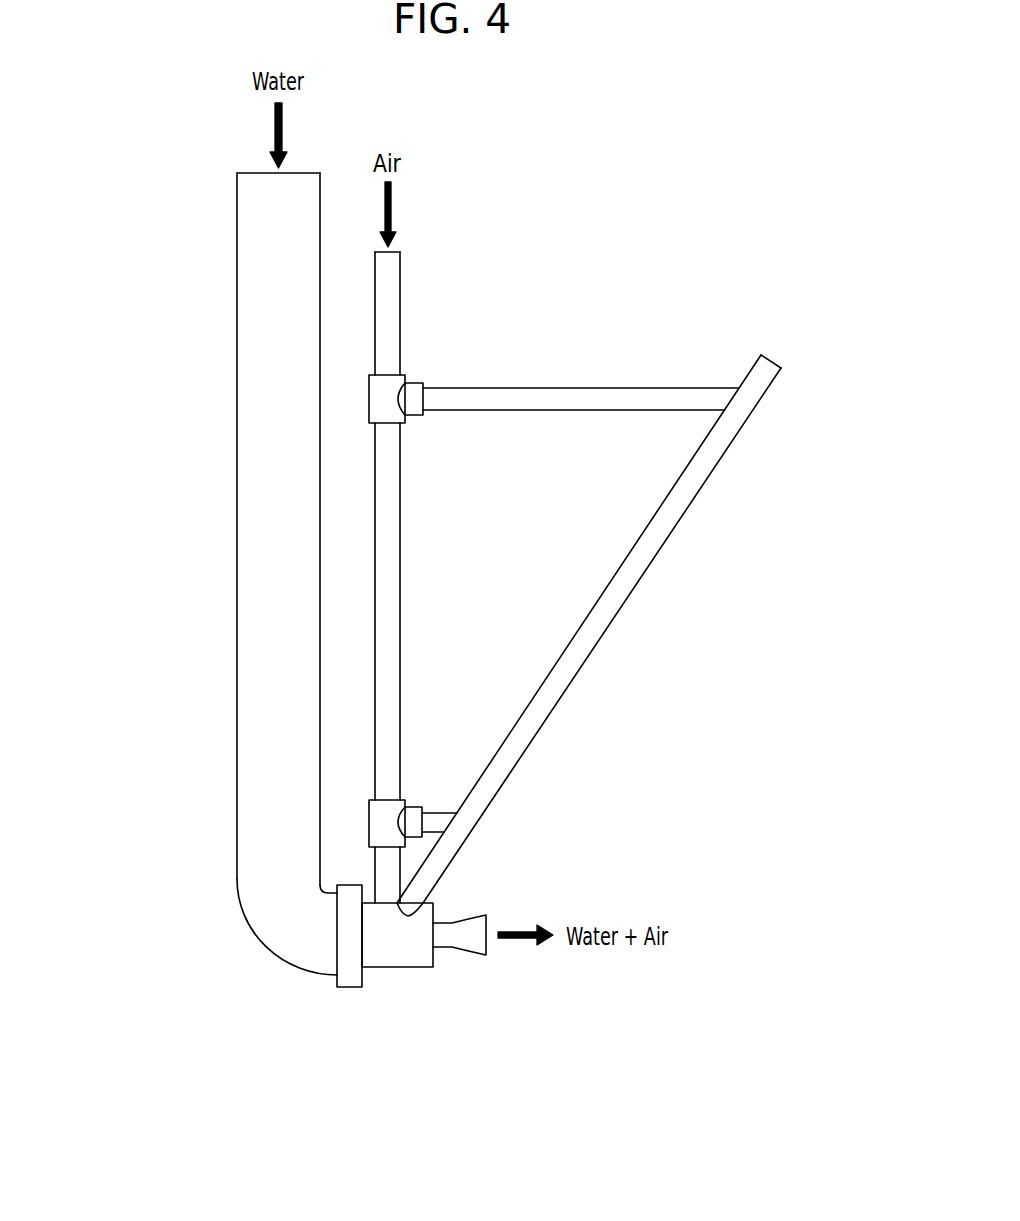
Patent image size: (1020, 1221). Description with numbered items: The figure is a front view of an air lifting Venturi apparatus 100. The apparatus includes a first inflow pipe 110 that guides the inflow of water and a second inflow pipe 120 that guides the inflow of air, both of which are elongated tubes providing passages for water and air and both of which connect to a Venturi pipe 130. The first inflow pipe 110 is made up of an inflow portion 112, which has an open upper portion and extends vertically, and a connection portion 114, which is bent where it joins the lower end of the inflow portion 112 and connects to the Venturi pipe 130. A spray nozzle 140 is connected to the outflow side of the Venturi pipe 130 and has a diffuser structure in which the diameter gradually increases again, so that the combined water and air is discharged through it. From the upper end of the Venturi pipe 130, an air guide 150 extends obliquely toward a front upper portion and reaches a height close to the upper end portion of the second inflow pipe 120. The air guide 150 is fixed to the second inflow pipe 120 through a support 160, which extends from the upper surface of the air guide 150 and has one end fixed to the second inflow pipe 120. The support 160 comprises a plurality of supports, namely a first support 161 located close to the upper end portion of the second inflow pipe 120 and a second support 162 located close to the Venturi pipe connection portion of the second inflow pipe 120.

The air lifting Venturi apparatus 100 is at (563, 248).
The first inflow pipe 110 is at (134, 839).
The inflow portion 112 is at (237, 825).
The connection portion 114 is at (280, 963).
The second inflow pipe 120 is at (402, 273).
The Venturi pipe 130 is at (407, 965).
The spray nozzle 140 is at (470, 956).
The air guide 150 is at (715, 443).
The support 160 is at (491, 582).
The first support 161 is at (473, 402).
The second support 162 is at (435, 822).